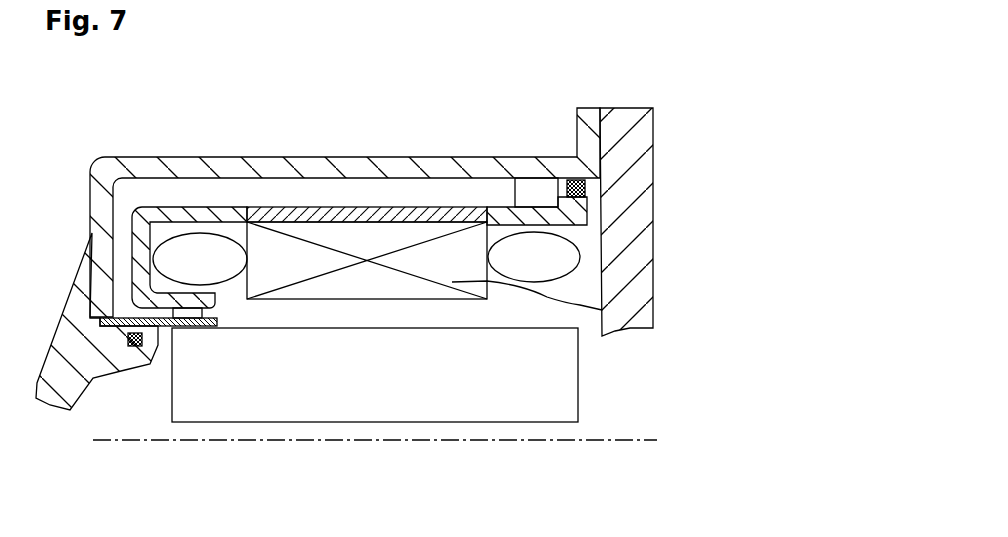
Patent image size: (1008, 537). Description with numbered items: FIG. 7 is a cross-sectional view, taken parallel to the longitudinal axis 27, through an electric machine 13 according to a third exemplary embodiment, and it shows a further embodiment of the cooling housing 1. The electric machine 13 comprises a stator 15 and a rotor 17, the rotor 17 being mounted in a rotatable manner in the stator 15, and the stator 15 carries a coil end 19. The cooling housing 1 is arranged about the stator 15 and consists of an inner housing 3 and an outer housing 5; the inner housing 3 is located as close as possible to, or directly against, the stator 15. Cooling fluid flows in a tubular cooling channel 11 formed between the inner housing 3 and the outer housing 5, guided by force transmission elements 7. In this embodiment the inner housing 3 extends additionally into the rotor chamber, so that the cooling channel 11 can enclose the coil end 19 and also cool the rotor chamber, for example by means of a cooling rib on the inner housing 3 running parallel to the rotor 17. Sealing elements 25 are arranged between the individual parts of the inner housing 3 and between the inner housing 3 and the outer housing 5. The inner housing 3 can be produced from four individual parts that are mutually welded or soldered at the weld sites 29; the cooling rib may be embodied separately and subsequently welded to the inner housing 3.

The cooling housing 1 is at (397, 134).
The inner housing 3 is at (360, 207).
The outer housing 5 is at (207, 160).
The force transmission elements 7 is at (441, 197).
The cooling channel 11 is at (533, 193).
The electric machine 13 is at (70, 152).
The stator 15 is at (602, 310).
The rotor 17 is at (510, 372).
The coil end 19 is at (553, 253).
The sealing elements 25 is at (585, 188).
The longitudinal axis 27 is at (183, 442).
The weld sites 29 is at (243, 218).